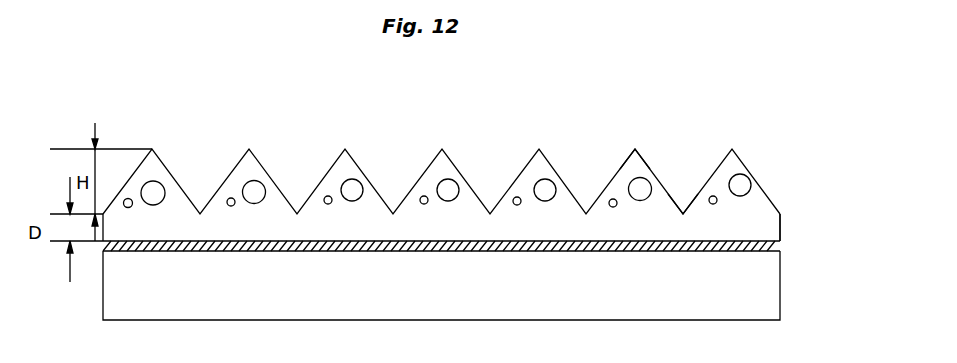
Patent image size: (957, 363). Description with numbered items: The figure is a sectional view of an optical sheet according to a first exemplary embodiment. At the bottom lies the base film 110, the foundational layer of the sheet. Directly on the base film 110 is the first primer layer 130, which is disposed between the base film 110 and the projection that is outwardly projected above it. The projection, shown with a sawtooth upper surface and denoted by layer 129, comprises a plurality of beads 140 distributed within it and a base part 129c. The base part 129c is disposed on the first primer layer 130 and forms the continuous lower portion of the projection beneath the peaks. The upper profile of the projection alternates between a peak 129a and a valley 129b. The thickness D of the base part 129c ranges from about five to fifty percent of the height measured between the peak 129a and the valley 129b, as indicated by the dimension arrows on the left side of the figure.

The base film 110 is at (773, 286).
The first primer layer 130 is at (772, 242).
The uneven layer 129 is at (757, 187).
The peak 129a is at (634, 148).
The valley 129b is at (683, 211).
The base part 129c is at (772, 222).
The beads 140 is at (745, 173).